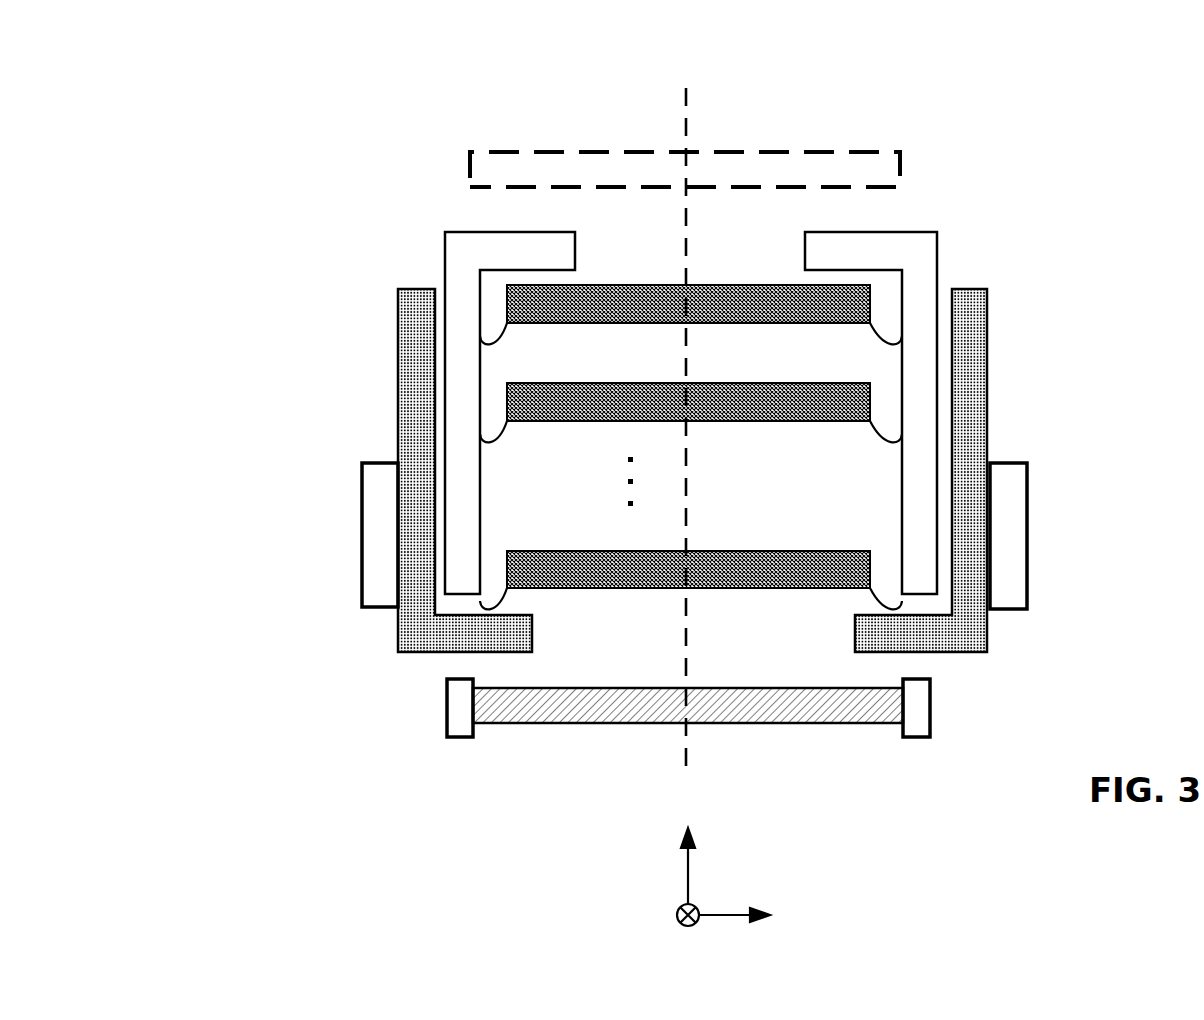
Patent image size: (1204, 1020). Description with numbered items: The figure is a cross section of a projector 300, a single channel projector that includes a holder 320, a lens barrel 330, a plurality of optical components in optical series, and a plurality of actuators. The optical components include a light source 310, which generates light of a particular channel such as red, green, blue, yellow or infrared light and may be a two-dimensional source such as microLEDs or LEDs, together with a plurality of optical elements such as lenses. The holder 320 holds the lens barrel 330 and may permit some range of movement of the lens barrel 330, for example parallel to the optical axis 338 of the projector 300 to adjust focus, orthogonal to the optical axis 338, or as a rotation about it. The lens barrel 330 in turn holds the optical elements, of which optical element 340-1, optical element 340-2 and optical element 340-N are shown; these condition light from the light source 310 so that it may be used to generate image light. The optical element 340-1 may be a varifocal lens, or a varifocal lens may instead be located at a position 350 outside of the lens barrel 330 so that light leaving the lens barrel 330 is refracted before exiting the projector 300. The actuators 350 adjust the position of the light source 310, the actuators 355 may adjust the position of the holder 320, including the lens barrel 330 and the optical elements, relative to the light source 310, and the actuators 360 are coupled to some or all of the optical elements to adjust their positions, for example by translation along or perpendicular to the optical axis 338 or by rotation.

The projector 300 is at (659, 482).
The light source 310 is at (598, 712).
The holder 320 is at (988, 330).
The lens barrel 330 is at (925, 283).
The optical axis 338 is at (685, 753).
The optical element 340-1 is at (525, 293).
The optical element 340-2 is at (578, 387).
The optical element 340-N is at (538, 550).
The position / actuators 350 is at (848, 152).
The actuators 355 is at (367, 528).
The actuators 360 is at (890, 430).